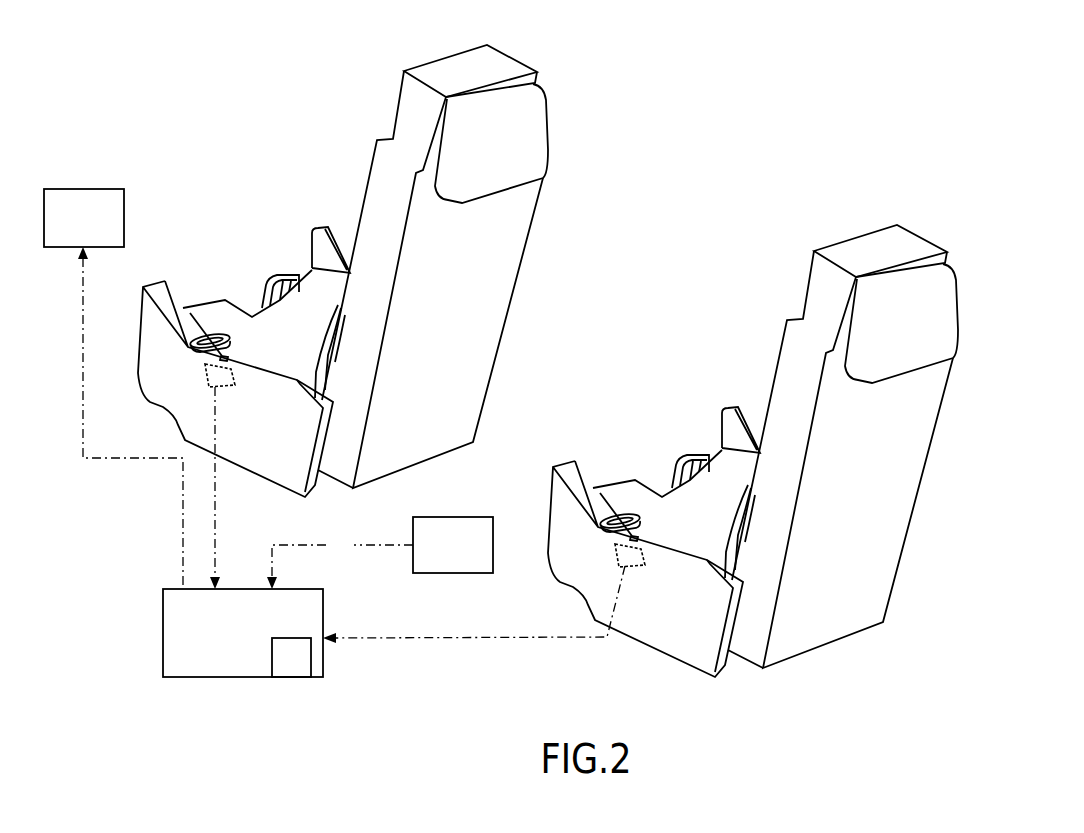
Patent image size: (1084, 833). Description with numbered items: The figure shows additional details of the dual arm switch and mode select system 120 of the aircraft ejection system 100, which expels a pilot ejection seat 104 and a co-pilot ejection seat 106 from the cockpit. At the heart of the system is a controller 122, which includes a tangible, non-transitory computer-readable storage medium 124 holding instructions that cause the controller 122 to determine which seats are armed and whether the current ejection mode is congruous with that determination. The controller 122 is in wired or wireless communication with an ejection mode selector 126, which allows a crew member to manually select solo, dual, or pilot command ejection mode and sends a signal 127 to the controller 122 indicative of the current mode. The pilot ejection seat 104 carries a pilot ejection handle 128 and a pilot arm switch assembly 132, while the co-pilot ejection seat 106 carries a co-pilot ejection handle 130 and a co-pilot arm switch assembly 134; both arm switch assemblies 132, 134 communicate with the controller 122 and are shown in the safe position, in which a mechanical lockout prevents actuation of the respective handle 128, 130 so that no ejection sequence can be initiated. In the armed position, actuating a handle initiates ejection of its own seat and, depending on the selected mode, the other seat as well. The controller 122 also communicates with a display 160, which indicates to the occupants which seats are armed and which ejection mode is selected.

The aircraft ejection system 100 is at (808, 68).
The pilot ejection seat 104 is at (451, 300).
The co-pilot ejection seat 106 is at (861, 480).
The dual arm switch and mode select (DASMS) system 120 is at (138, 556).
The controller 122 is at (222, 643).
The computer-readable storage medium 124 is at (278, 667).
The ejection mode selector 126 is at (435, 555).
The signal 127 is at (340, 561).
The pilot ejection handle 128 is at (284, 277).
The co-pilot ejection handle 130 is at (694, 457).
The pilot arm switch assembly 132 is at (219, 322).
The co-pilot arm switch assembly 134 is at (629, 502).
The display 160 is at (72, 227).